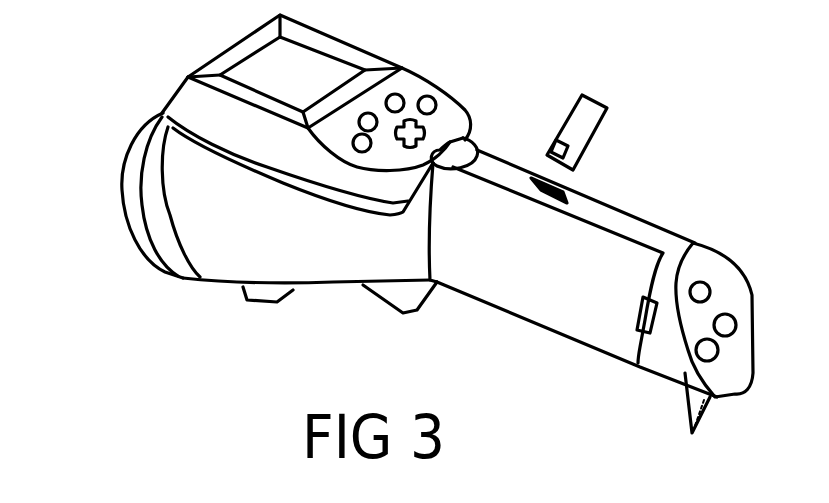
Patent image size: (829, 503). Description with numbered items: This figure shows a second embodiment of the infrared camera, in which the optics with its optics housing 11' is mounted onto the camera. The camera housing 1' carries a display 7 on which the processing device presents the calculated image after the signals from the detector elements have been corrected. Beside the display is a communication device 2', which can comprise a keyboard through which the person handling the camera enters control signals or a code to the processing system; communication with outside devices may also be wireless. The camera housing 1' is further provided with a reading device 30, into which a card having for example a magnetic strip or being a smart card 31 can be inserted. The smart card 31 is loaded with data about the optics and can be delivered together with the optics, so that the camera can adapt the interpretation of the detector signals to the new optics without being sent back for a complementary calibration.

The camera housing 1' is at (595, 291).
The communication device 2' is at (418, 113).
The display 7 is at (327, 65).
The optics housing 11' is at (117, 195).
The reading device 30 is at (547, 202).
The smart card 31 is at (587, 143).